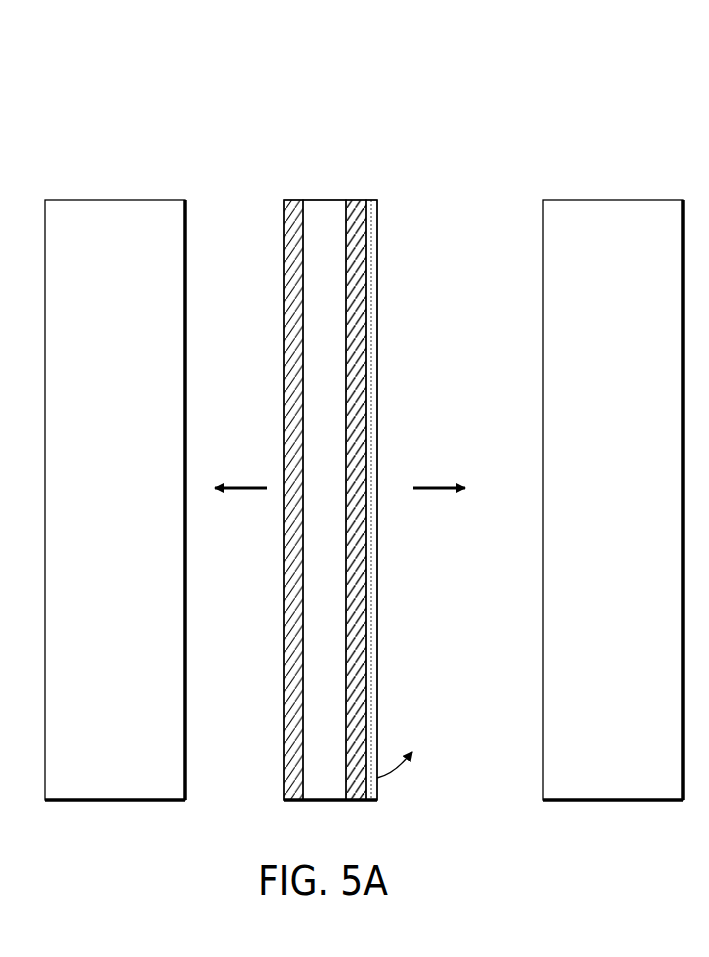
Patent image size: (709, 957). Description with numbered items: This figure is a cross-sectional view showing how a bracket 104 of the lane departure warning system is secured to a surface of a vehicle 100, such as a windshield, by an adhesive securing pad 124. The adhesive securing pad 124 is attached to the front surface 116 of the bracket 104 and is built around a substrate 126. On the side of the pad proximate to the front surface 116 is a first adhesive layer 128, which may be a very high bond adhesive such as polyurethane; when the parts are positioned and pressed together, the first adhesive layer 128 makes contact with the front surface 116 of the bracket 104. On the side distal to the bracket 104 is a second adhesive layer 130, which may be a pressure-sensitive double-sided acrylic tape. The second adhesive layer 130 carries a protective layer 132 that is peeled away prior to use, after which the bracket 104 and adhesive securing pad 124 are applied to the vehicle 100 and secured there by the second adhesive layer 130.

The vehicle 100 is at (631, 339).
The bracket 104 is at (133, 339).
The front surface 116 is at (186, 220).
The adhesive securing pad 124 is at (323, 54).
The substrate 126 is at (318, 240).
The first adhesive layer 128 is at (291, 207).
The second adhesive layer 130 is at (356, 208).
The protective layer 132 is at (376, 660).